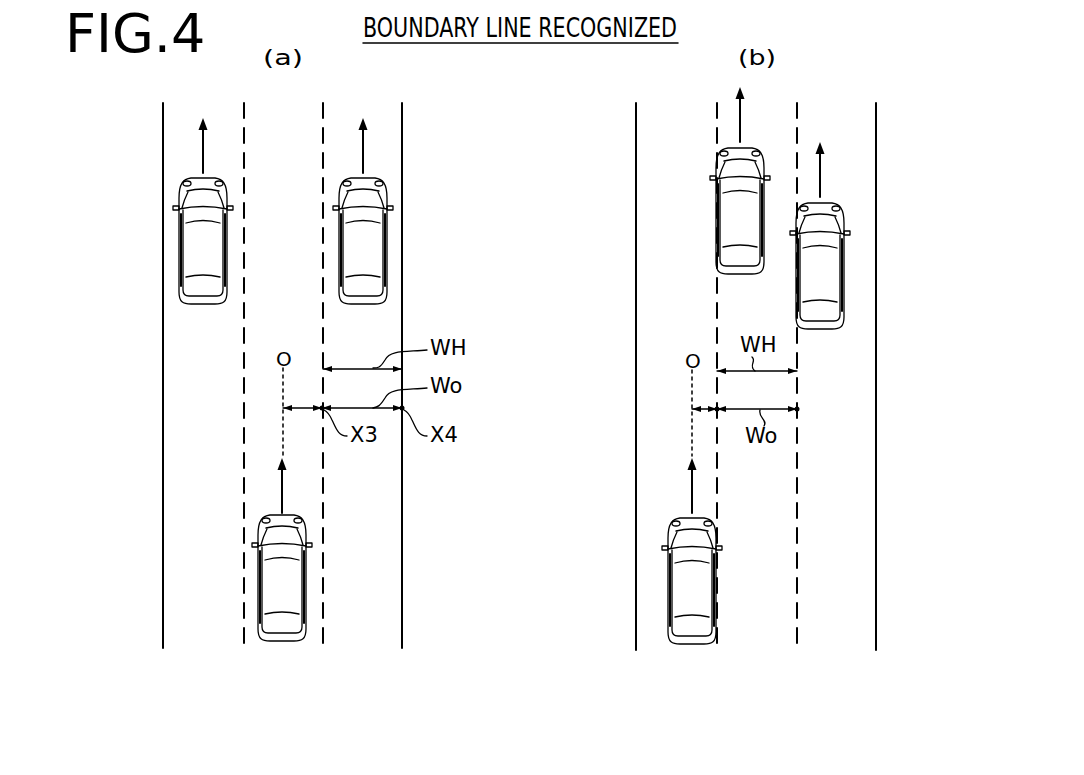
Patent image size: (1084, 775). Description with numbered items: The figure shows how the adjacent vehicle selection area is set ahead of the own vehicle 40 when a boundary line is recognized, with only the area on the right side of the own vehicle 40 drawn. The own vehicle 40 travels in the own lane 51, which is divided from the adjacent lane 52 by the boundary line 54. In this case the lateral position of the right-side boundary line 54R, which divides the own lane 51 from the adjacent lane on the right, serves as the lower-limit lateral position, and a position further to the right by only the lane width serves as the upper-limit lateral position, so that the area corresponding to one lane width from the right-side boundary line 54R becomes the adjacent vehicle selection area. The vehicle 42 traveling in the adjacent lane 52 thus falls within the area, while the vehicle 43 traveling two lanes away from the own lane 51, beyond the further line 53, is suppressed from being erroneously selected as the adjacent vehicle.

The own vehicle 40 is at (303, 630).
The vehicle 42 is at (193, 266).
The vehicle 43 is at (828, 290).
The own lane 51 is at (262, 490).
The adjacent lane 52 is at (170, 550).
The road edge boundary line 53 is at (862, 633).
The boundary line 54 is at (240, 618).
The right-side boundary line 54R is at (323, 618).